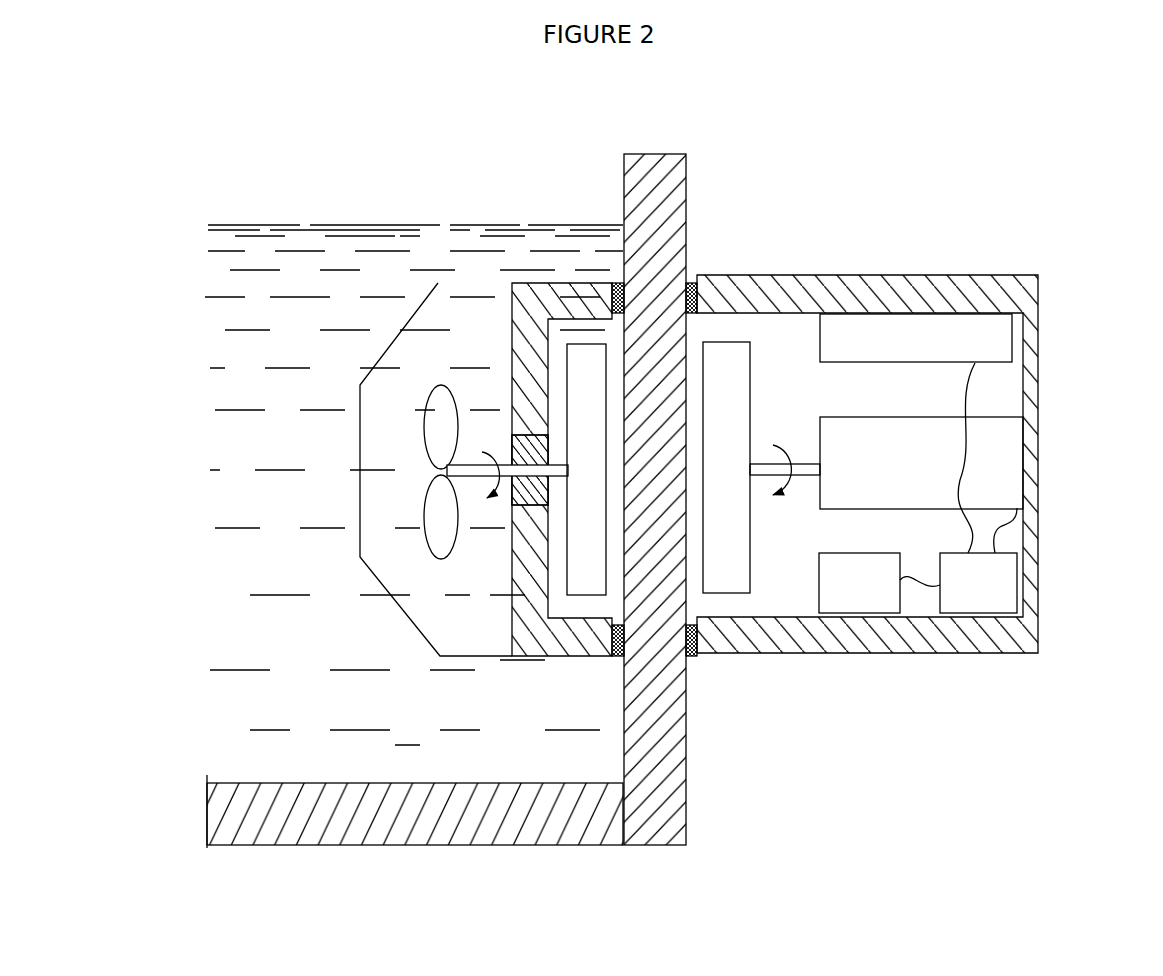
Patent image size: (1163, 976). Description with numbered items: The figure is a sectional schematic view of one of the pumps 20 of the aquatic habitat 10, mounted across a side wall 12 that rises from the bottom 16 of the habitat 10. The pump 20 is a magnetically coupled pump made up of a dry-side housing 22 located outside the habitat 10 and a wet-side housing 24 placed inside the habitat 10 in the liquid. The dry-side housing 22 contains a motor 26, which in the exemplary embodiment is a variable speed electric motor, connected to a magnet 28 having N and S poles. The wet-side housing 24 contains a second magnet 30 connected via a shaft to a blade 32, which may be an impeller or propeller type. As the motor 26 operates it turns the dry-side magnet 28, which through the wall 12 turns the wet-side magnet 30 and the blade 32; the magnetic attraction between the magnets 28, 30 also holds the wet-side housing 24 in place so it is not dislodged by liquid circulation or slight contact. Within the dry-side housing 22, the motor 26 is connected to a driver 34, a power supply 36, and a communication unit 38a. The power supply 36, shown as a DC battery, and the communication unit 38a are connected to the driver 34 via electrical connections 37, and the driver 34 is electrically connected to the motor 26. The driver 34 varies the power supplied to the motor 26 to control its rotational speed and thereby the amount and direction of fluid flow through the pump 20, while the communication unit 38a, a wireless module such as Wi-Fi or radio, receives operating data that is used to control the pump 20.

The habitat 10 is at (245, 160).
The side wall 12 is at (655, 727).
The bottom 16 is at (437, 828).
The pump 20 is at (862, 344).
The dry-side housing 22 is at (770, 275).
The wet-side housing 24 is at (573, 283).
The motor 26 is at (1013, 462).
The magnet 28 is at (745, 583).
The magnet 30 is at (607, 580).
The blade 32 is at (436, 528).
The driver 34 is at (995, 573).
The power supply 36 is at (865, 597).
The electrical connections 37 is at (1012, 525).
The communication unit 38a is at (893, 340).